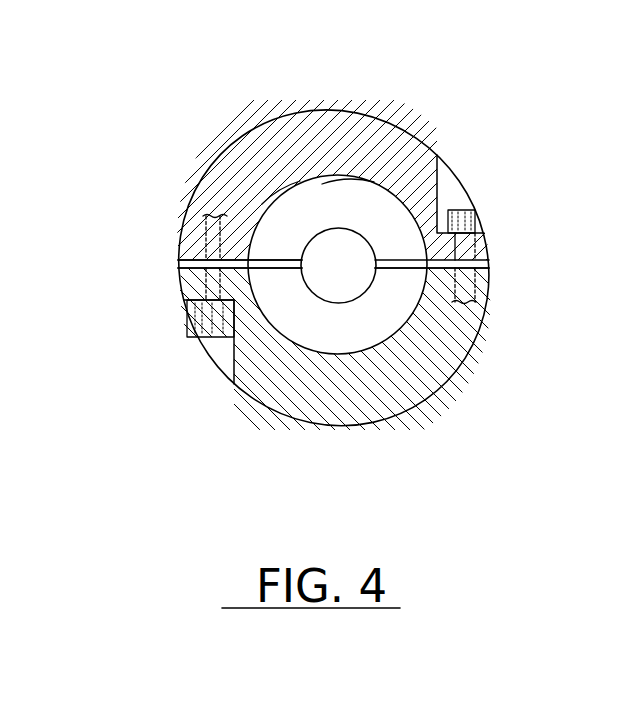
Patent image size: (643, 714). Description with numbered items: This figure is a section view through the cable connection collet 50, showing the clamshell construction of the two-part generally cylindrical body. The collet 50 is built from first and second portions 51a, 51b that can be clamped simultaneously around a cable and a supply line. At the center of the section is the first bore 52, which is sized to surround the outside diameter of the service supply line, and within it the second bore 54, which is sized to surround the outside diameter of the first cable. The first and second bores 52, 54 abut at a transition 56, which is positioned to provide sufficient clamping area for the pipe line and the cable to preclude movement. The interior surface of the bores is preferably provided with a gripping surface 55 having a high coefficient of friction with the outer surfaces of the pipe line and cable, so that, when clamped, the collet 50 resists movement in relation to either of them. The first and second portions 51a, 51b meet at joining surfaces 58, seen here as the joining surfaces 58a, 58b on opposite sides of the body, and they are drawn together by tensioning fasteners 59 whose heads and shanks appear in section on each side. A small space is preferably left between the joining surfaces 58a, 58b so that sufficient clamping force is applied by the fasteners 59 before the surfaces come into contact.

The collet 50 is at (481, 74).
The first portion 51a is at (418, 136).
The second portion 51b is at (248, 404).
The first bore 52 is at (414, 325).
The second bore 54 is at (304, 229).
The inner surface 55 is at (365, 190).
The transition 56 is at (304, 201).
The joining surfaces 58 is at (506, 261).
The joining surface 58a is at (483, 278).
The joining surface 58b is at (183, 257).
The tensioning fasteners 59 is at (476, 198).